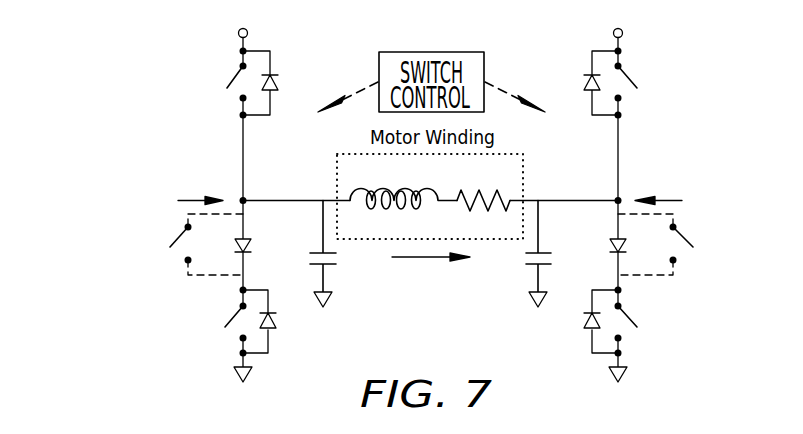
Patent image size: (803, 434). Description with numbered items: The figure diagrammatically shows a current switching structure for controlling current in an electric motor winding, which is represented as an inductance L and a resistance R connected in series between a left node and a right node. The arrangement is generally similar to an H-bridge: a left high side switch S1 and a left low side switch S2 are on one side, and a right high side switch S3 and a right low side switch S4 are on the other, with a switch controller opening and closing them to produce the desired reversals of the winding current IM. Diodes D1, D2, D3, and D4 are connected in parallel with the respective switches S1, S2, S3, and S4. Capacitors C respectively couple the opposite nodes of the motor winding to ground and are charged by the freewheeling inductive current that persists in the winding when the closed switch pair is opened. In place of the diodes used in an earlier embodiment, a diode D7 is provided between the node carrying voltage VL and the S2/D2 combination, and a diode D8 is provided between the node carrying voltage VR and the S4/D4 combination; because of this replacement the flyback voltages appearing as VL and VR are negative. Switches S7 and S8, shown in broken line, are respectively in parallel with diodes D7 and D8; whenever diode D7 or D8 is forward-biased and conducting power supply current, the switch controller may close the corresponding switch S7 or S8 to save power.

The left high side switch S1 is at (220, 81).
The diode D1 is at (276, 83).
The left low side switch S2 is at (219, 321).
The diode D2 is at (273, 321).
The right high side switch S3 is at (644, 81).
The diode D3 is at (587, 83).
The right low side switch S4 is at (644, 321).
The diode D4 is at (587, 321).
The switch S7 is at (190, 244).
The diode D7 is at (258, 247).
The switch S8 is at (672, 244).
The diode D8 is at (604, 247).
The capacitor C is at (430, 254).
The inductance L is at (403, 186).
The resistance R is at (483, 187).
The left node voltage VL is at (187, 200).
The right node voltage VR is at (673, 204).
The winding current IM is at (431, 271).